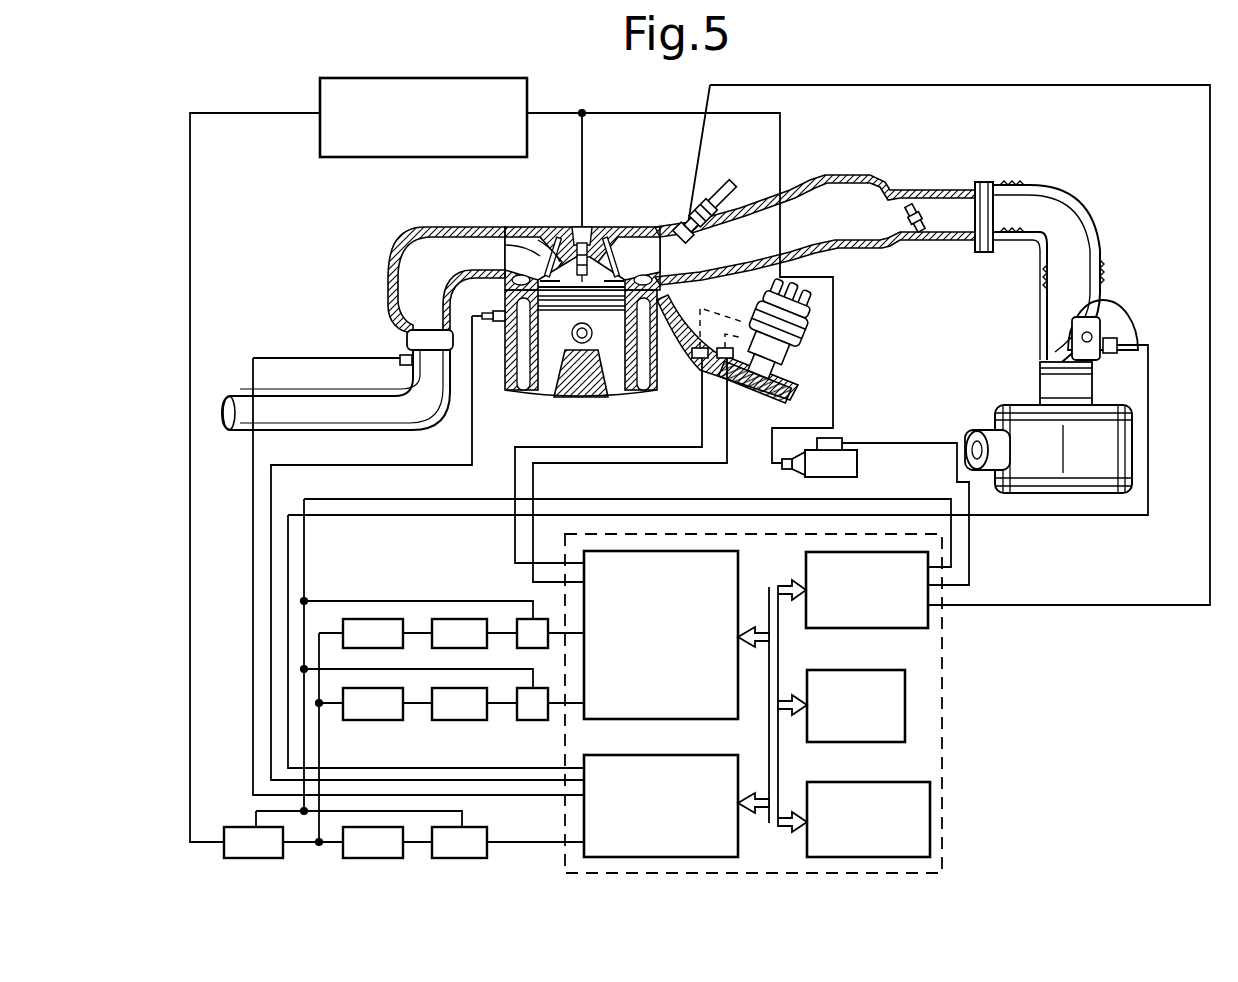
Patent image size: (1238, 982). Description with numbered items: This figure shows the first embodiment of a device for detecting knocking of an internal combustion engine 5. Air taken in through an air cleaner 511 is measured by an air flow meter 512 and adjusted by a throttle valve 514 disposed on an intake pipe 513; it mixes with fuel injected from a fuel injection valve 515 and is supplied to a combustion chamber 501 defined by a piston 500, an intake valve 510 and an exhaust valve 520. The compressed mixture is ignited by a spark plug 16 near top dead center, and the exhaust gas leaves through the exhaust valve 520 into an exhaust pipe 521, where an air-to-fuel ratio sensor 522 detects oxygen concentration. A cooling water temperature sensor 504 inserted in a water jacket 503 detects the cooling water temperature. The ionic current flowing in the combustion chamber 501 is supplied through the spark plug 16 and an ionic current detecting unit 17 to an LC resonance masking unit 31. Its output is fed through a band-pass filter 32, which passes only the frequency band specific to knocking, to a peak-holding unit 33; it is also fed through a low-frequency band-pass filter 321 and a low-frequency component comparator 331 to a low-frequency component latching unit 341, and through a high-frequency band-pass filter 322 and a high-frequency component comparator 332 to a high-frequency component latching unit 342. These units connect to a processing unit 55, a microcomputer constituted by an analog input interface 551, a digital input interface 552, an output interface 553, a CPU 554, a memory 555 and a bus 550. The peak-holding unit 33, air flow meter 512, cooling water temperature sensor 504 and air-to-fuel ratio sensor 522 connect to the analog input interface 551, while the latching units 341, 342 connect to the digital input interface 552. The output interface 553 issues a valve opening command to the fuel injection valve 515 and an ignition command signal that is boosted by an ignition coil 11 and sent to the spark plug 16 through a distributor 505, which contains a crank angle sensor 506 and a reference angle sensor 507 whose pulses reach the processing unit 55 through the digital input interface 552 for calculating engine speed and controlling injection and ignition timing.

The internal combustion engine 5 is at (596, 404).
The ignition coil 11 is at (857, 462).
The spark plug 16 is at (584, 236).
The ionic current detecting unit 17 is at (320, 144).
The LC resonance masking unit 31 is at (250, 860).
The band-pass filter 32 is at (368, 860).
The peak-holding unit 33 is at (460, 860).
The processing unit 55 is at (945, 738).
The low-frequency band-pass filter 321 is at (372, 618).
The high-frequency band-pass filter 322 is at (372, 721).
The low-frequency component comparator 331 is at (455, 618).
The high-frequency component comparator 332 is at (461, 721).
The low-frequency component latching unit 341 is at (530, 618).
The high-frequency component latching unit 342 is at (535, 721).
The piston 500 is at (550, 347).
The combustion chamber 501 is at (556, 236).
The water jacket 503 is at (522, 388).
The cooling water temperature sensor 504 is at (470, 307).
The distributor 505 is at (813, 340).
The crank angle sensor 506 is at (696, 360).
The reference angle sensor 507 is at (732, 392).
The intake valve 510 is at (610, 228).
The air cleaner 511 is at (990, 430).
The air flow meter 512 is at (1138, 314).
The intake pipe 513 is at (958, 188).
The throttle valve 514 is at (922, 240).
The fuel injection valve 515 is at (712, 188).
The exhaust valve 520 is at (520, 240).
The exhaust pipe 521 is at (392, 242).
The air-to-fuel ratio sensor 522 is at (398, 357).
The bus 550 is at (778, 826).
The analog input interface 551 is at (650, 755).
The digital input interface 552 is at (738, 592).
The output interface 553 is at (850, 630).
The CPU 554 is at (850, 742).
The memory 555 is at (930, 818).